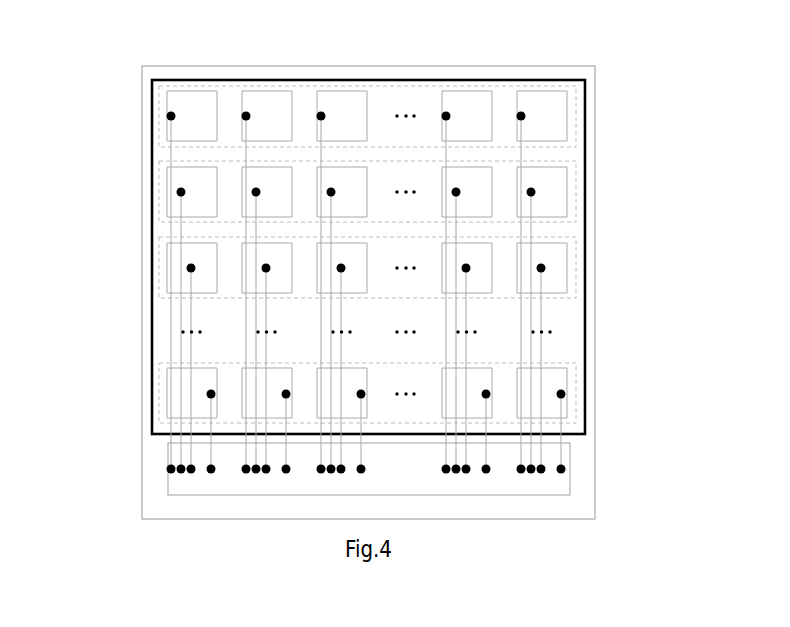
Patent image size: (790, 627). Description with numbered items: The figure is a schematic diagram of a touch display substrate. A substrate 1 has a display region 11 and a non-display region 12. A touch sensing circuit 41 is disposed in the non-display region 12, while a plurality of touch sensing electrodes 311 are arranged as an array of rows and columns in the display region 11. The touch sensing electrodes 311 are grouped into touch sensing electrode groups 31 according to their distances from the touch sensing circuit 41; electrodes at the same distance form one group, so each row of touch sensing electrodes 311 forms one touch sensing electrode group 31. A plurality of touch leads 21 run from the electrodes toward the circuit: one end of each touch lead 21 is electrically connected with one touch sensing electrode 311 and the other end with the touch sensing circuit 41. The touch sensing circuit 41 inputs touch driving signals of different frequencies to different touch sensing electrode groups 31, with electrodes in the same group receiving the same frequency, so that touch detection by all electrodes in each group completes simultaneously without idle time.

The substrate 1 is at (595, 215).
The display region 11 is at (587, 320).
The non-display region 12 is at (580, 477).
The touch leads 21 is at (172, 328).
The touch sensing electrode groups 31 is at (577, 110).
The touch sensing electrodes 311 is at (345, 92).
The touch sensing circuit 41 is at (168, 491).